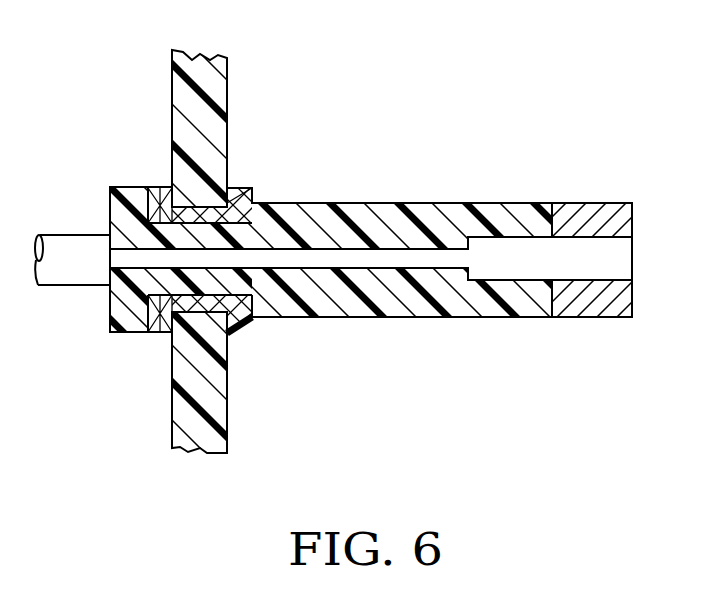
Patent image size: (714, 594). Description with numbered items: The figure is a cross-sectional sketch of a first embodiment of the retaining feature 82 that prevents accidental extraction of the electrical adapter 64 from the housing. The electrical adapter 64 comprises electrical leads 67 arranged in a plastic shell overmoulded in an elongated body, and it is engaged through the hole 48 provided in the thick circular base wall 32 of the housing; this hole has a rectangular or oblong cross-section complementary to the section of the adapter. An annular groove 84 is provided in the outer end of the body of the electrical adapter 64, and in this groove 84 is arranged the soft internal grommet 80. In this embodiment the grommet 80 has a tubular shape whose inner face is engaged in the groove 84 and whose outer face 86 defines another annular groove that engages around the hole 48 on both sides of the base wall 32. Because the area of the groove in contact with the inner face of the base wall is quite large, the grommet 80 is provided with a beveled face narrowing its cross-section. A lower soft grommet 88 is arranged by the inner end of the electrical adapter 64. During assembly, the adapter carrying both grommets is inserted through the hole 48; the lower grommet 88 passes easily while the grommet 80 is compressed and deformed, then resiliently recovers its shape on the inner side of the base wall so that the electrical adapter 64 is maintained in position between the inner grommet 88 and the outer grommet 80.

The circular base wall 32 is at (178, 98).
The hole 48 is at (144, 358).
The electrical adapter 64 is at (493, 113).
The electrical leads 67 is at (420, 310).
The internal grommet 80 is at (240, 193).
The retaining feature 82 is at (258, 98).
The annular groove 84 is at (158, 197).
The outer face 86 is at (163, 200).
The lower soft grommet 88 is at (585, 208).